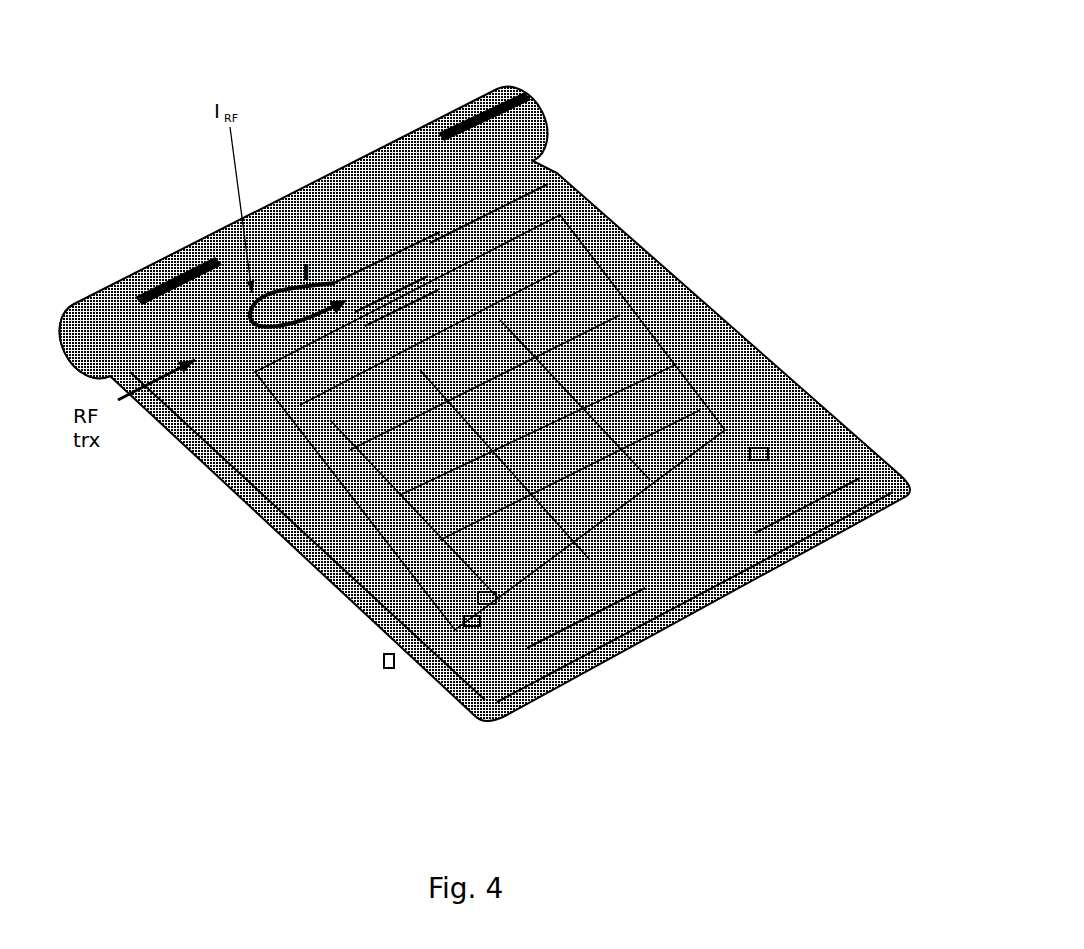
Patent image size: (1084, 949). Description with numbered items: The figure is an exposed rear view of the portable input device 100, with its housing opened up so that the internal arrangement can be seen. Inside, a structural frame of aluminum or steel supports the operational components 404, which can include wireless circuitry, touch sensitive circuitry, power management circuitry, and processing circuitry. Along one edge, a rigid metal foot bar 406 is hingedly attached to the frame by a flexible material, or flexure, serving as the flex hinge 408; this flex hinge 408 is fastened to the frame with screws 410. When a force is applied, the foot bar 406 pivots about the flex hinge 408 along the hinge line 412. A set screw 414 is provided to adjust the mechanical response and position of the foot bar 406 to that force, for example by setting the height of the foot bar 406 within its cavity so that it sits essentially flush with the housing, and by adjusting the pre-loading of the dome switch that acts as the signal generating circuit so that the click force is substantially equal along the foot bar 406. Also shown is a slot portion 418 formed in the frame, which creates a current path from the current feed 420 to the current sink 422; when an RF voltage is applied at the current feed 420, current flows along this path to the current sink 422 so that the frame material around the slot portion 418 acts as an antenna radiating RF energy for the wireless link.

The portable input device 100 is at (770, 78).
The operational components 404 is at (490, 422).
The foot bar 406 is at (755, 533).
The flex hinge 408 is at (488, 600).
The screws 410 is at (473, 622).
The hinge line 412 is at (385, 663).
The set screw 414 is at (527, 648).
The slot portion 418 is at (430, 243).
The current feed 420 is at (337, 277).
The current sink 422 is at (420, 280).